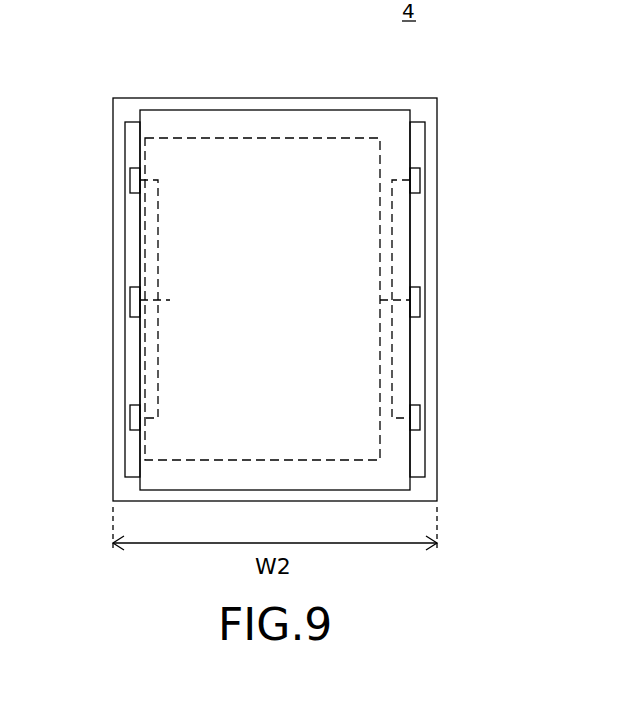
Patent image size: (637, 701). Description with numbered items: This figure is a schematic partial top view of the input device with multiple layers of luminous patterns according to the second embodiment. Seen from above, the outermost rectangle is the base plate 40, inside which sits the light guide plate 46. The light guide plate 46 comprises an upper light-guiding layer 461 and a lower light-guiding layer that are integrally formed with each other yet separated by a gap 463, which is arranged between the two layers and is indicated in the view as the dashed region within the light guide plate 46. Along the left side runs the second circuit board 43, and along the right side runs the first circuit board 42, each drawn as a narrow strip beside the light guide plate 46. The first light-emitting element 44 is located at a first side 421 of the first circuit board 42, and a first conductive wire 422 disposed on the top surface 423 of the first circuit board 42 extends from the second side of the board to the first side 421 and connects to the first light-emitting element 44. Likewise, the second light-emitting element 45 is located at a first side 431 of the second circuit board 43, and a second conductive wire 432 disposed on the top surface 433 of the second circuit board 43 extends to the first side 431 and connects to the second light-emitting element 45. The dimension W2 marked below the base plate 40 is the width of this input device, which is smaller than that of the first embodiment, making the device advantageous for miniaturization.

The base plate 40 is at (426, 117).
The first circuit board 42 is at (417, 224).
The second circuit board 43 is at (131, 224).
The first light-emitting element 44 is at (416, 178).
The second light-emitting element 45 is at (135, 178).
The light guide plate 46 is at (250, 116).
The first side of the first circuit board 421 is at (415, 367).
The first conductive wire 422 is at (392, 343).
The top surface of the first circuit board 423 is at (415, 268).
The first side of the second circuit board 431 is at (135, 367).
The second conductive wire 432 is at (158, 343).
The top surface of the second circuit board 433 is at (133, 268).
The upper light-guiding layer 461 is at (180, 118).
The gap 463 is at (297, 148).